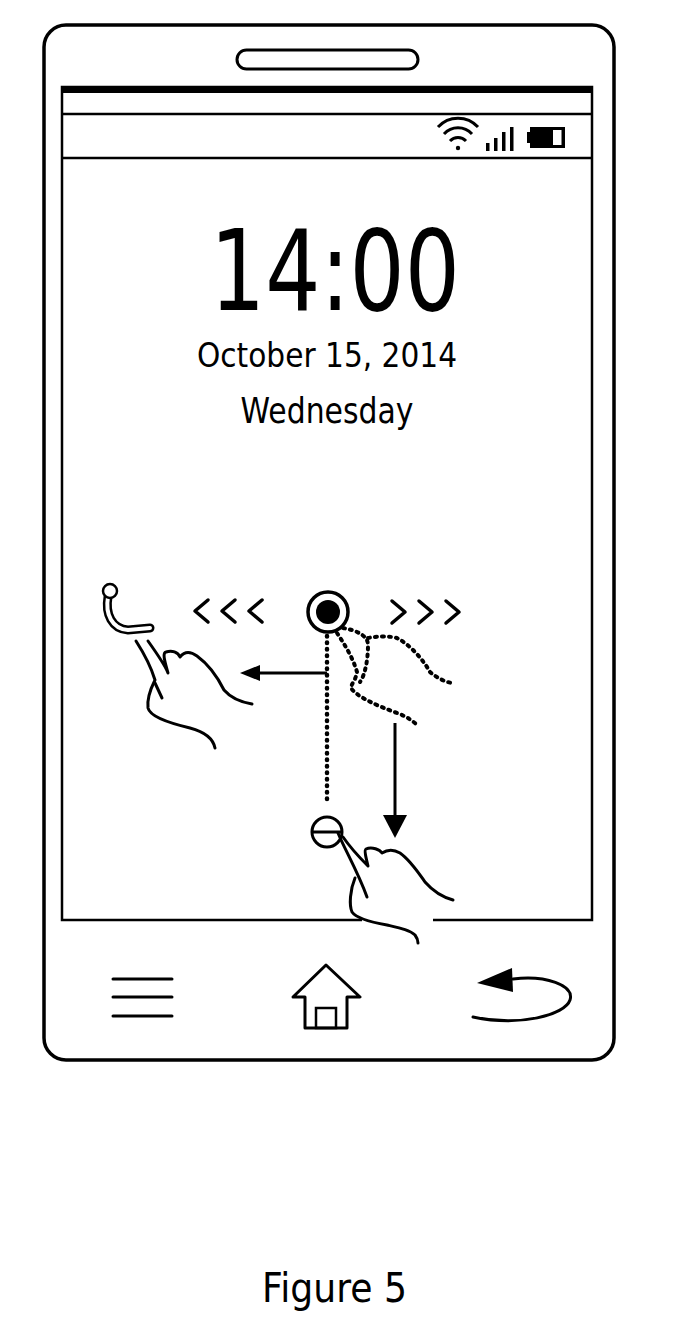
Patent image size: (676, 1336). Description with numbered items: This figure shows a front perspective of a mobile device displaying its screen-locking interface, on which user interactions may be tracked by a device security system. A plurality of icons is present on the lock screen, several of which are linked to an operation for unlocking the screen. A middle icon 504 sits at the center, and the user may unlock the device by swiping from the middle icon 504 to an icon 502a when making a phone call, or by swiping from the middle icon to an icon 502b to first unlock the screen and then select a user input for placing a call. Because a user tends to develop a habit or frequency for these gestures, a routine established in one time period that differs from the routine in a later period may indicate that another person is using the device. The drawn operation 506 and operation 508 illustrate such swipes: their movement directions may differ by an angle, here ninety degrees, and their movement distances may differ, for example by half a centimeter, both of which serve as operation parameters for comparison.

The icon 502a is at (99, 571).
The icon 502b is at (306, 845).
The middle icon 504 is at (309, 573).
The operation 506 is at (397, 758).
The operation 508 is at (303, 678).